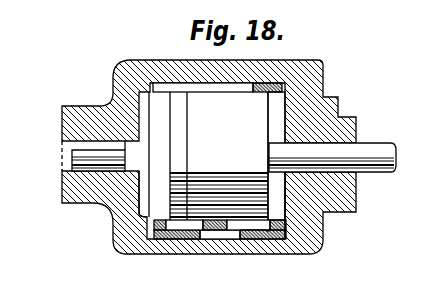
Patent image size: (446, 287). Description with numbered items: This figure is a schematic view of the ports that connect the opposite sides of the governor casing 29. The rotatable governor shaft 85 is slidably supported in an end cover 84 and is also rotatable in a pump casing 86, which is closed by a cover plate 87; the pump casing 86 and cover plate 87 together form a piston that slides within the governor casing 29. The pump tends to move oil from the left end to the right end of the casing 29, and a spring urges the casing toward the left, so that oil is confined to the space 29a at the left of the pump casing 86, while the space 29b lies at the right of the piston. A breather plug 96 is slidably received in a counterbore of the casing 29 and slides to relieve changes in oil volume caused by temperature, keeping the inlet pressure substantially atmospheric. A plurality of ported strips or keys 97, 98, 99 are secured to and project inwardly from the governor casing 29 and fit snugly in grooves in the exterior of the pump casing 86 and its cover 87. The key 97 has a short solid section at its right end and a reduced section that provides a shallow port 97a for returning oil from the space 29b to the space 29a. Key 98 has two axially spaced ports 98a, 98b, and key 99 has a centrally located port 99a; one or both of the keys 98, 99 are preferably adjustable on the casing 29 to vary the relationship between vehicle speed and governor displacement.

The governor casing 29 is at (127, 232).
The space 29a is at (143, 186).
The space 29b is at (278, 202).
The end cover 84 is at (301, 128).
The governor shaft 85 is at (385, 146).
The pump casing 86 is at (270, 115).
The cover plate 87 is at (182, 122).
The breather plug 96 is at (72, 156).
The key 97 is at (274, 83).
The shallow port 97a is at (167, 87).
The key 98 is at (285, 226).
The port 98a is at (256, 228).
The port 98b is at (185, 228).
The key 99 is at (159, 230).
The port 99a is at (222, 228).